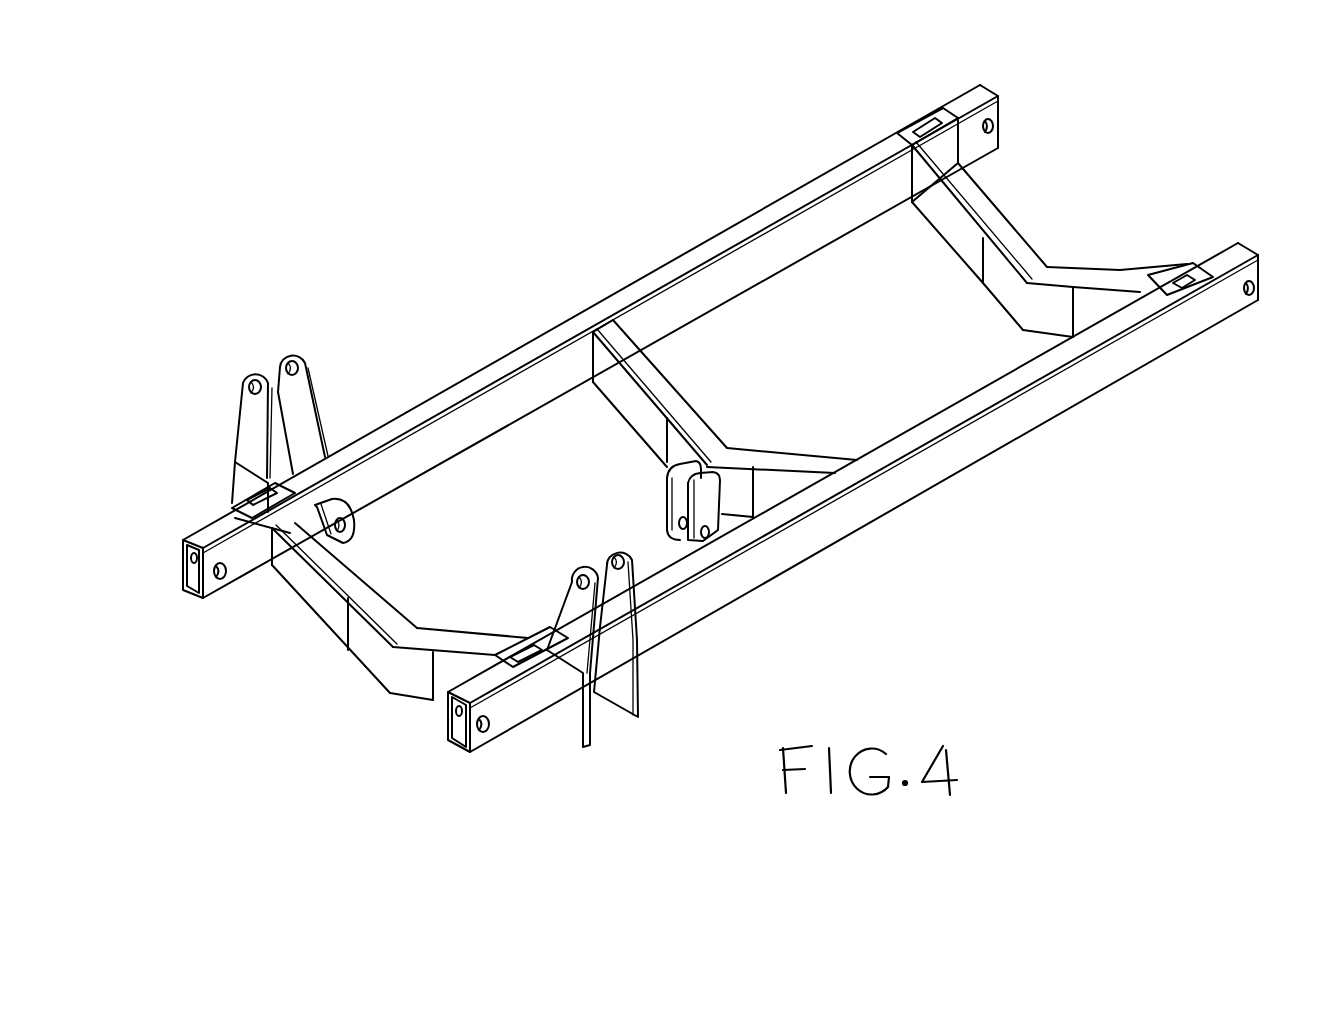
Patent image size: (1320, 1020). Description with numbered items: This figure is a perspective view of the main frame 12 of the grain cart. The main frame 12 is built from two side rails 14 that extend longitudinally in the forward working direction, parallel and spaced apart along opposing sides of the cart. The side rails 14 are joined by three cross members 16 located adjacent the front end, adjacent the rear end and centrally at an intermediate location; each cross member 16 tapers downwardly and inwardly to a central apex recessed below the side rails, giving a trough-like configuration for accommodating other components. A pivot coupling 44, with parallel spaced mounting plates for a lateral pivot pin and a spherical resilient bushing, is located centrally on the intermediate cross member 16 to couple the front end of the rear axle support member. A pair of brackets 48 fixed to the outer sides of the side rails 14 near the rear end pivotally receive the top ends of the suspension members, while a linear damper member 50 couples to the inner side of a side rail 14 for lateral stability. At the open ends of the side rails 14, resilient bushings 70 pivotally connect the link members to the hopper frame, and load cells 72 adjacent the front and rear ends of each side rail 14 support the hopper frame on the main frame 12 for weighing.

The main frame 12 is at (484, 129).
The side rails 14 is at (806, 186).
The cross members 16 is at (393, 675).
The pivot coupling 44 is at (666, 513).
The brackets 48 is at (253, 432).
The linear damper member 50 is at (360, 530).
The resilient bushing 70 is at (227, 582).
The load cells 72 is at (255, 507).